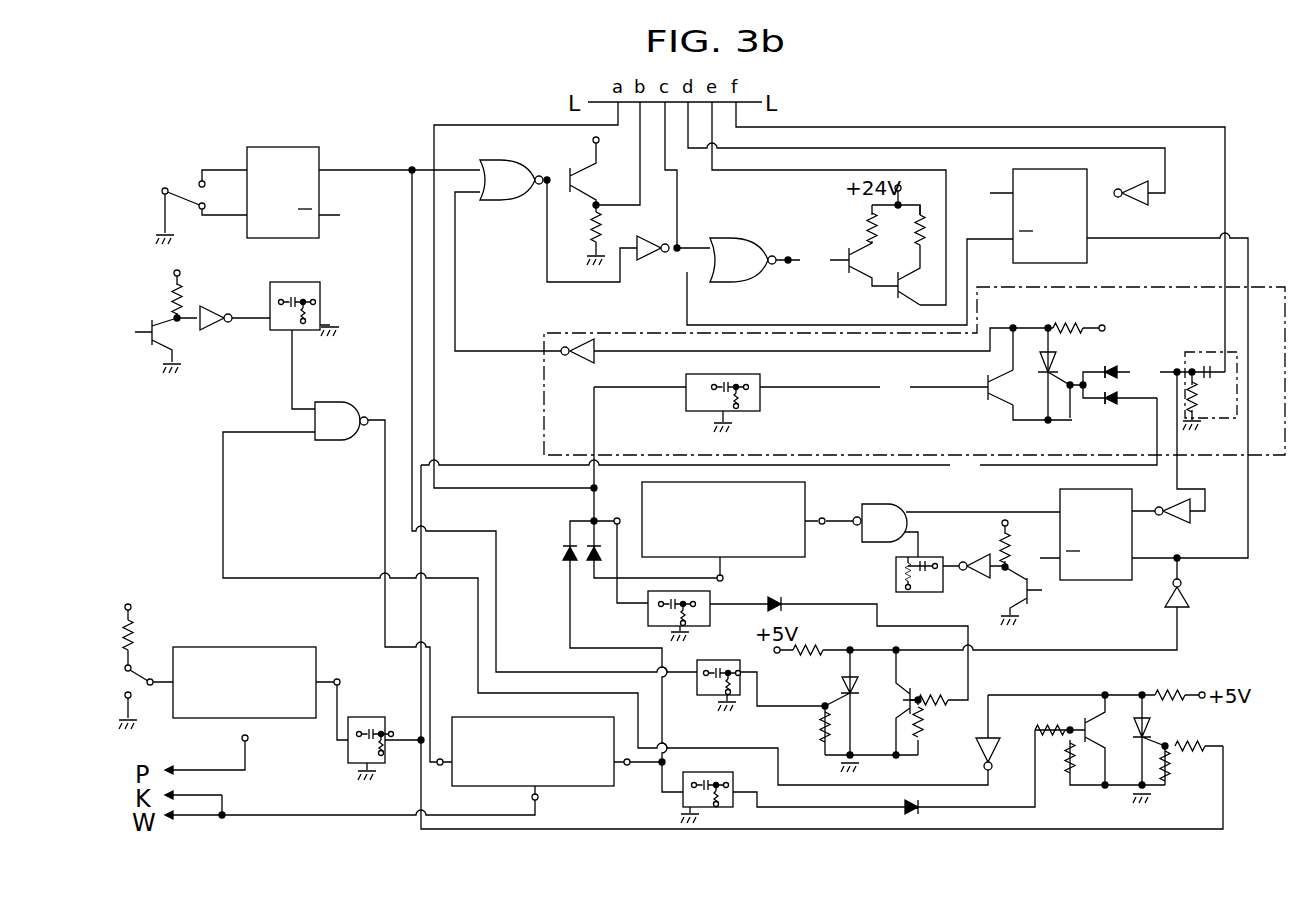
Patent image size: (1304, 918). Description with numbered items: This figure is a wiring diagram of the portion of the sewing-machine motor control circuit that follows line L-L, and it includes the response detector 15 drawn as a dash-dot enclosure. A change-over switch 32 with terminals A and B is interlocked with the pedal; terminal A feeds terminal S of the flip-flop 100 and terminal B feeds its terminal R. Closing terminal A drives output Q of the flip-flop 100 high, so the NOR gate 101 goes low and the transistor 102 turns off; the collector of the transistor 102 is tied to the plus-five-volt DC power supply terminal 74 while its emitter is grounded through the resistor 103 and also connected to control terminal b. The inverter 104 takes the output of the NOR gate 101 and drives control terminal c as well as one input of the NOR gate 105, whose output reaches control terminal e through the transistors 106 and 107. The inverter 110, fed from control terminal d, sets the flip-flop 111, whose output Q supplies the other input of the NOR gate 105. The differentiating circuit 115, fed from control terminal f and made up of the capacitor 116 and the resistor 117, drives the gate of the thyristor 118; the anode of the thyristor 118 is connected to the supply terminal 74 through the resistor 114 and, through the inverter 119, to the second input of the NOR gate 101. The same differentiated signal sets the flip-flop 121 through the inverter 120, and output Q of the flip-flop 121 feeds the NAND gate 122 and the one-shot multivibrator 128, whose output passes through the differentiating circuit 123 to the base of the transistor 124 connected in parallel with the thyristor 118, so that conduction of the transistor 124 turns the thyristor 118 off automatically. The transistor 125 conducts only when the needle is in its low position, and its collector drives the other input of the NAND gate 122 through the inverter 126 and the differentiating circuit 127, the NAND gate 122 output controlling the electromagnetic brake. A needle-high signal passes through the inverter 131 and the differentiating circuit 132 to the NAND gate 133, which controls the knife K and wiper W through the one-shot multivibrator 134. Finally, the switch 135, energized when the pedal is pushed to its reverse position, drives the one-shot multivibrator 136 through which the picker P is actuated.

The response detector 15 is at (544, 412).
The change-over switch 32 is at (184, 198).
The DC power supply terminal 74 is at (592, 140).
The flip-flop 100 is at (319, 152).
The NOR gate 101 is at (503, 158).
The transistor 102 is at (585, 179).
The resistor 103 is at (600, 226).
The inverter 104 is at (653, 258).
The NOR gate 105 is at (738, 240).
The transistor 106 is at (856, 271).
The transistor 107 is at (900, 293).
The inverter 110 is at (1140, 202).
The flip-flop 111 is at (1013, 212).
The resistor 114 is at (1068, 323).
The differentiating circuit 115 is at (1196, 352).
The capacitor 116 is at (1199, 388).
The resistor 117 is at (1183, 397).
The thyristor 118 is at (1057, 360).
The inverter 119 is at (576, 363).
The inverter 120 is at (1171, 520).
The flip-flop 121 is at (1110, 581).
The NAND gate 122 is at (909, 504).
The differentiating circuit 123 is at (760, 406).
The transistor 124 is at (988, 396).
The transistor 125 is at (1028, 606).
The inverter 126 is at (971, 578).
The differentiating circuit 127 is at (896, 572).
The one-shot multivibrator 128 is at (805, 495).
The inverter 131 is at (226, 281).
The differentiating circuit 132 is at (320, 293).
The NAND gate 133 is at (343, 402).
The one-shot multivibrator 134 is at (576, 787).
The switch 135 is at (150, 680).
The one-shot multivibrator 136 is at (258, 648).